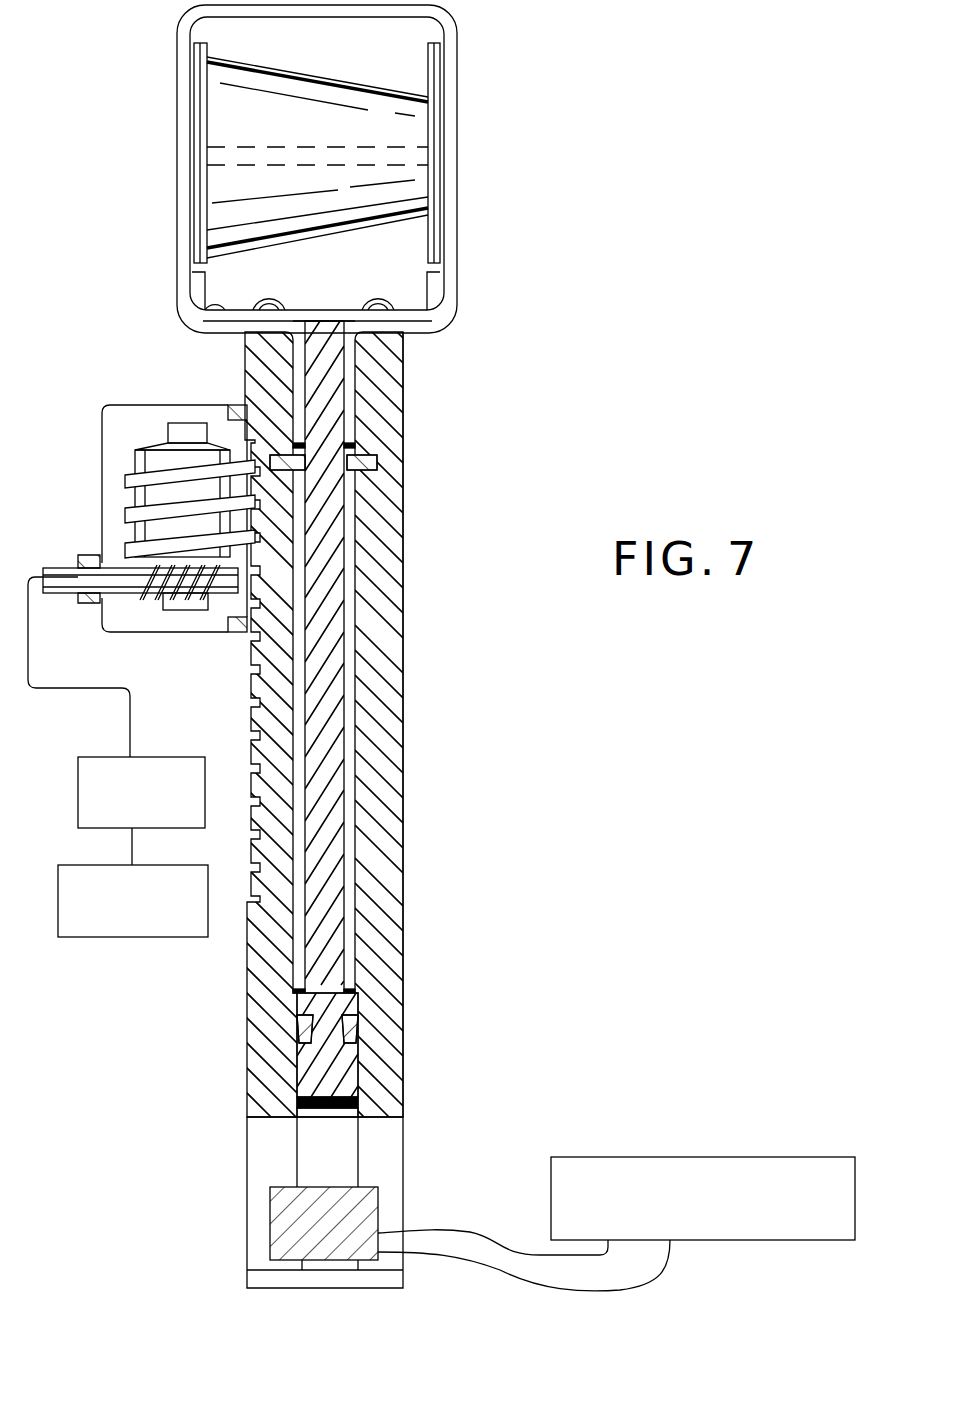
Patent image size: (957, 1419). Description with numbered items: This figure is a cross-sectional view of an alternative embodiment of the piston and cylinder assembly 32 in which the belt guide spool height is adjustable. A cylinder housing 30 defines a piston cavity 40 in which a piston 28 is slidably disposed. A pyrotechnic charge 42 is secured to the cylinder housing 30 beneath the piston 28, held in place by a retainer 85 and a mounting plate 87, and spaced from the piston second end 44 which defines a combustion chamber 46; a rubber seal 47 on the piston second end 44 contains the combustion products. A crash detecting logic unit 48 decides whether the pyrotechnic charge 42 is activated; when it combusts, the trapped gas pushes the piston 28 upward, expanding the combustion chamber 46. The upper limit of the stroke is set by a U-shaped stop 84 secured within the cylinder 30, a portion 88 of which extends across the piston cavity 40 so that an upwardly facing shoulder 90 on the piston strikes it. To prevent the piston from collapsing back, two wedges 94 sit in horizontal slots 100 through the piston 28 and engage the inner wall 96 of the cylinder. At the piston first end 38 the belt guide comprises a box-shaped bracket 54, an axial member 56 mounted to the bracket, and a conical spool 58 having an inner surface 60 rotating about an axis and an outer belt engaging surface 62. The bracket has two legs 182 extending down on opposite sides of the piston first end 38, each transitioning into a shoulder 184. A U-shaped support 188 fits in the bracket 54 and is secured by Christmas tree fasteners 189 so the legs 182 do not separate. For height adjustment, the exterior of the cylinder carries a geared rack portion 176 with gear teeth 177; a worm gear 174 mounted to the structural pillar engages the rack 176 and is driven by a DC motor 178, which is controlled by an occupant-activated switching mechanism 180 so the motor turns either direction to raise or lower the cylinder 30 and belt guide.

The piston 28 is at (347, 613).
The cylinder housing 30 is at (403, 672).
The piston and cylinder assembly 32 is at (512, 222).
The piston first end 38 is at (352, 332).
The piston cavity 40 is at (350, 530).
The pyrotechnic charge 42 is at (378, 1202).
The piston second end 44 is at (358, 1103).
The combustion chamber 46 is at (298, 1172).
The rubber seal 47 is at (337, 1106).
The crash detecting logic unit 48 is at (795, 1157).
The box-shaped bracket 54 is at (457, 62).
The axial member 56 is at (286, 147).
The conical spool 58 is at (320, 80).
The inner surface 60 is at (278, 166).
The outer belt engaging surface 62 is at (270, 64).
The U-shaped stop 84 is at (360, 457).
The retainer 85 is at (247, 1180).
The mounting plate 87 is at (247, 1268).
The portion of the stop 88 is at (350, 478).
The upwardly facing shoulder 90 is at (350, 990).
The wedges 94 is at (297, 1030).
The inner wall of the cylinder 96 is at (352, 378).
The horizontal slots 100 is at (305, 1005).
The worm gear 174 is at (123, 483).
The geared rack portion 176 is at (252, 658).
The gear teeth 177 is at (257, 718).
The DC motor 178 is at (95, 757).
The switching mechanism 180 is at (107, 937).
The legs 182 is at (357, 416).
The shoulder 184 is at (540, 306).
The U-shaped support 188 is at (205, 297).
The fasteners 189 is at (267, 302).